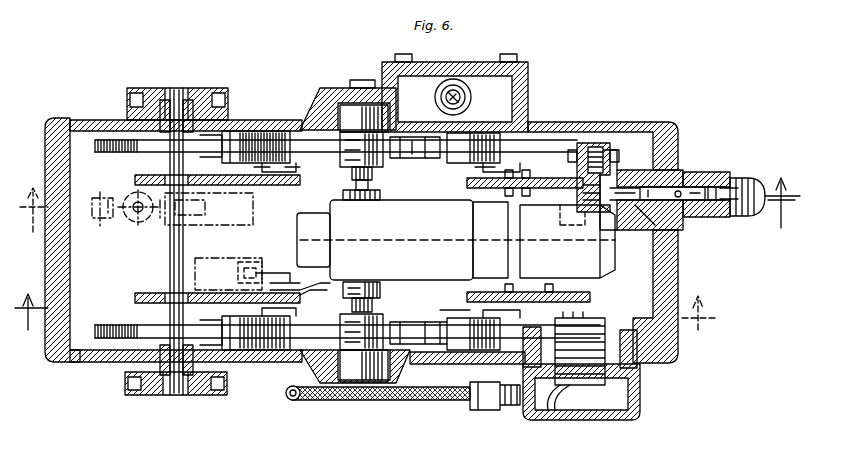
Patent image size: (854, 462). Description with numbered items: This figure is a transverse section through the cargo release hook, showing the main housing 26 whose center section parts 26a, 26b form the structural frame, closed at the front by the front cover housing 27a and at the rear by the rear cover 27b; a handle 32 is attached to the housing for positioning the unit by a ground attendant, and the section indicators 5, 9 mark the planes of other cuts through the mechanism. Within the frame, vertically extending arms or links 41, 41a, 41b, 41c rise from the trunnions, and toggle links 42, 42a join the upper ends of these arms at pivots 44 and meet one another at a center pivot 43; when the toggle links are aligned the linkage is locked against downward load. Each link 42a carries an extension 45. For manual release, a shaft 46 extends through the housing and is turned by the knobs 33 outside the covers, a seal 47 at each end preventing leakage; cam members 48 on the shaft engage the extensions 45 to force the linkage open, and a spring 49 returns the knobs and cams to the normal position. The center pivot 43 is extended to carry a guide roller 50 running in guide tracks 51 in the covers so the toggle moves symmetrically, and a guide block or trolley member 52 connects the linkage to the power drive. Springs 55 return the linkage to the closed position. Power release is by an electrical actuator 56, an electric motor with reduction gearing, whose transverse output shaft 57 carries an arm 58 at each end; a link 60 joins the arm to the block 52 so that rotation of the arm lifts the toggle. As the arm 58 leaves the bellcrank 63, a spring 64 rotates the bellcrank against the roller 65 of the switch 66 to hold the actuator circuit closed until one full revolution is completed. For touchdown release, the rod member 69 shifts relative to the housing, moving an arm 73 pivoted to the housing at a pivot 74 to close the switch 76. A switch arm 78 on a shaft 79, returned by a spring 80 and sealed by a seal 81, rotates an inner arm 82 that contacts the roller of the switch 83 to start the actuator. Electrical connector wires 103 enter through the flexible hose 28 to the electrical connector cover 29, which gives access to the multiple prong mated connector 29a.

The section line 5- 5 is at (407, 213).
The section line 9- 9 is at (365, 304).
The main housing 26 is at (646, 115).
The center section part 26a is at (680, 272).
The center section part 26b is at (680, 225).
The front cover housing 27a is at (680, 355).
The rear cover 27b is at (665, 145).
The flexible hose 28 is at (380, 402).
The electrical connector cover 29 is at (640, 418).
The multiple prong mated connector 29a is at (620, 360).
The handle 32 is at (752, 180).
The knobs 33 is at (128, 92).
The vertically extending arm or link 41 is at (450, 352).
The vertically extending arm or link 41a is at (522, 120).
The arm or link 41b is at (266, 352).
The arm or link 41c is at (238, 130).
The toggle link 42 is at (420, 136).
The toggle link 42a is at (295, 138).
The pivot 43 is at (350, 172).
The pivots 44 is at (252, 132).
The extension 45 is at (212, 135).
The shaft 46 is at (168, 260).
The seal 47 is at (160, 115).
The cam member 48 is at (97, 143).
The spring 49 is at (158, 365).
The guide roller 50 is at (335, 120).
The guide tracks 51 is at (352, 118).
The guide block or trolley member 52 is at (385, 160).
The springs 55 is at (548, 158).
The electrical actuator 56 is at (595, 280).
The transverse output shaft 57 is at (355, 183).
The arm 58 is at (378, 200).
The link 60 is at (382, 192).
The bellcrank 63 is at (305, 292).
The spring 64 is at (300, 300).
The roller 65 is at (252, 266).
The switch 66 is at (214, 262).
The rod member 69 is at (130, 220).
The arm 73 is at (206, 210).
The pivot 74 is at (100, 222).
The switch 76 is at (254, 212).
The switch arm 78 is at (726, 190).
The shaft 79 is at (700, 172).
The spring 80 is at (712, 185).
The seal 81 is at (652, 180).
The arm 82 is at (595, 150).
The switch 83 is at (585, 145).
The electrical connector wires 103 is at (565, 410).